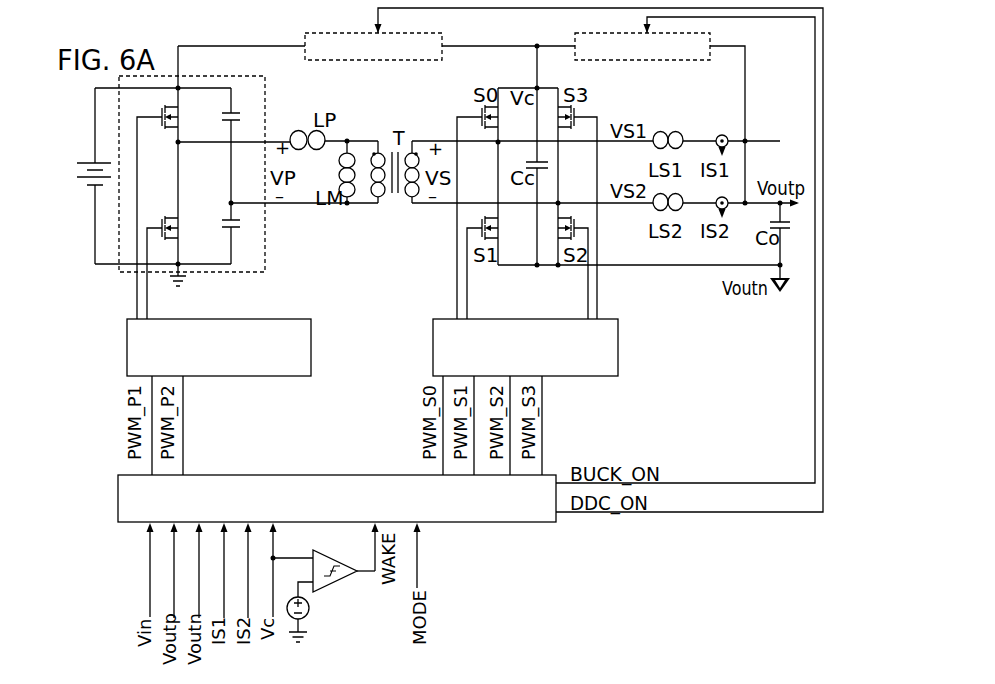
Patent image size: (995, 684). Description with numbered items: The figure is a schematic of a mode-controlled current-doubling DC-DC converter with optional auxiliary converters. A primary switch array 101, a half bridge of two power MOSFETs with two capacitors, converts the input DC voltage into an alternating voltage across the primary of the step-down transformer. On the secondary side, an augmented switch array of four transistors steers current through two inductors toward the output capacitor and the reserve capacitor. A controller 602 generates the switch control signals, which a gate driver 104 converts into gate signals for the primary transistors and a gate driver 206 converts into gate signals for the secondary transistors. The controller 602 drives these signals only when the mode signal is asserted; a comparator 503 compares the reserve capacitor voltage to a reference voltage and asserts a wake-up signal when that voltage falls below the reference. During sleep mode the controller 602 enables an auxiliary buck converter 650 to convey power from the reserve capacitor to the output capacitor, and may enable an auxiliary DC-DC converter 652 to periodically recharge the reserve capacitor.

The primary switch array 101 is at (268, 252).
The auxiliary DC-DC converter 652 is at (398, 60).
The auxiliary buck converter 650 is at (668, 60).
The gate driver 104 is at (267, 376).
The gate driver 206 is at (575, 376).
The controller 602 is at (515, 522).
The comparator 503 is at (327, 553).